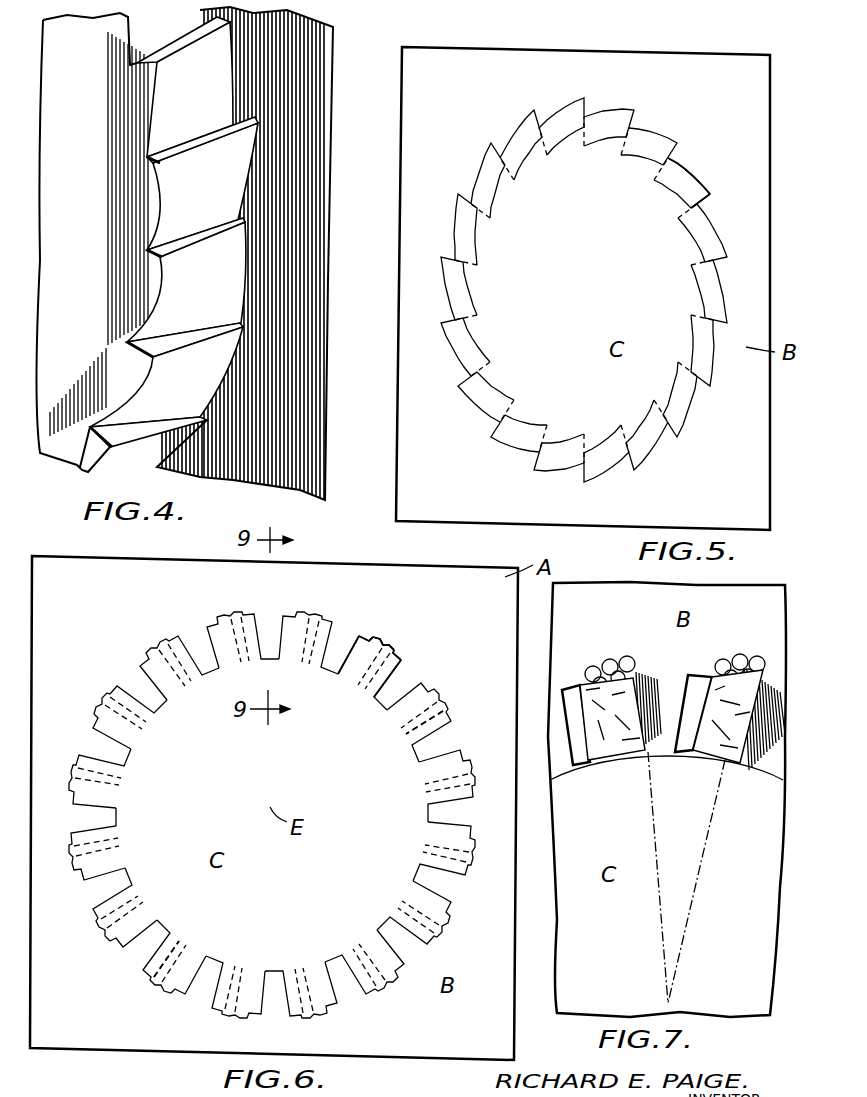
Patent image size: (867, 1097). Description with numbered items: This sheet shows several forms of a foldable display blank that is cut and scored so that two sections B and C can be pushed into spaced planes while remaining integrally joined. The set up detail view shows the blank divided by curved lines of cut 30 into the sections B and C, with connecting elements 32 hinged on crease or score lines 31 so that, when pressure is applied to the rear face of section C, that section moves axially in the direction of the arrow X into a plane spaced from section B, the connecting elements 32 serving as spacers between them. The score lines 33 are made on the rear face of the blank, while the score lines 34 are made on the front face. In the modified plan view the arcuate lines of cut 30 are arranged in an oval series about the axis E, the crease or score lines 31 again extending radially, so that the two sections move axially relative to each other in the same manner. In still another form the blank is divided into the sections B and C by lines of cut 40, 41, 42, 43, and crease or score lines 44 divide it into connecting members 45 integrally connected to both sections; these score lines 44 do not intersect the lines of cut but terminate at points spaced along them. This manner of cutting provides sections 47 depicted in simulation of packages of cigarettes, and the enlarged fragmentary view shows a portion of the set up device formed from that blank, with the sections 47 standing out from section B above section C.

In FIG. 5, the lines of cut 30 is at (683, 172).
In FIG. 5, the crease or score lines 31 is at (697, 180).
In FIG. 4, the connecting elements 32 is at (207, 232).
In FIG. 5, the connecting elements 32 is at (700, 207).
In FIG. 4, the crease or score lines 33 is at (182, 420).
In FIG. 4, the crease or score lines 34 is at (127, 344).
In FIG. 6, the lines of cut 40 is at (390, 900).
In FIG. 7, the lines of cut 40 is at (563, 775).
In FIG. 6, the lines of cut 41 is at (347, 647).
In FIG. 6, the lines of cut 42 is at (363, 638).
In FIG. 6, the lines of cut 43 is at (383, 645).
In FIG. 6, the crease or score lines 44 is at (387, 667).
In FIG. 6, the connecting members 45 is at (430, 713).
In FIG. 6, the sections 47 is at (190, 948).
In FIG. 7, the sections 47 is at (610, 740).
In FIG. 4, the section B is at (302, 188).
In FIG. 4, the section C is at (87, 242).
In FIG. 5, the axis E is at (583, 289).
In FIG. 5, the arrow X is at (627, 188).